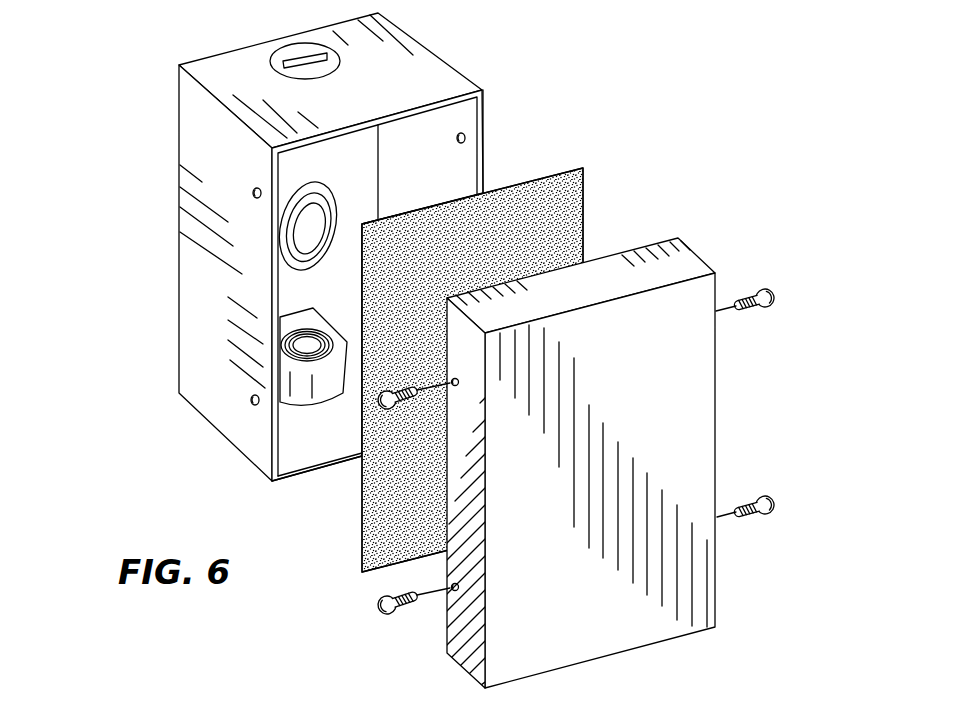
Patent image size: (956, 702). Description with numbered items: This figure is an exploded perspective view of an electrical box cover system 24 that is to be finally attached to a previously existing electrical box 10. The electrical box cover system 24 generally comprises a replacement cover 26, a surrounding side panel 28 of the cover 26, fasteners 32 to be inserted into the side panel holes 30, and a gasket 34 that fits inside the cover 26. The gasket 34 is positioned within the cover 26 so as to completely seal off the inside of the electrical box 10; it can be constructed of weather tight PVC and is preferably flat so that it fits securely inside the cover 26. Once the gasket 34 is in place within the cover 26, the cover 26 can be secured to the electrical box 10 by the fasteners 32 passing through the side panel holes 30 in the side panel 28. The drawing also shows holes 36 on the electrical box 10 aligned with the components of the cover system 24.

The electrical box 10 is at (190, 112).
The electrical box cover system 24 is at (640, 207).
The replacement cover 26 is at (578, 469).
The surrounding side panel 28 is at (462, 656).
The side panel holes 30 is at (453, 388).
The fasteners 32 is at (378, 406).
The gasket 34 is at (537, 200).
The mounting holes 36 is at (252, 193).